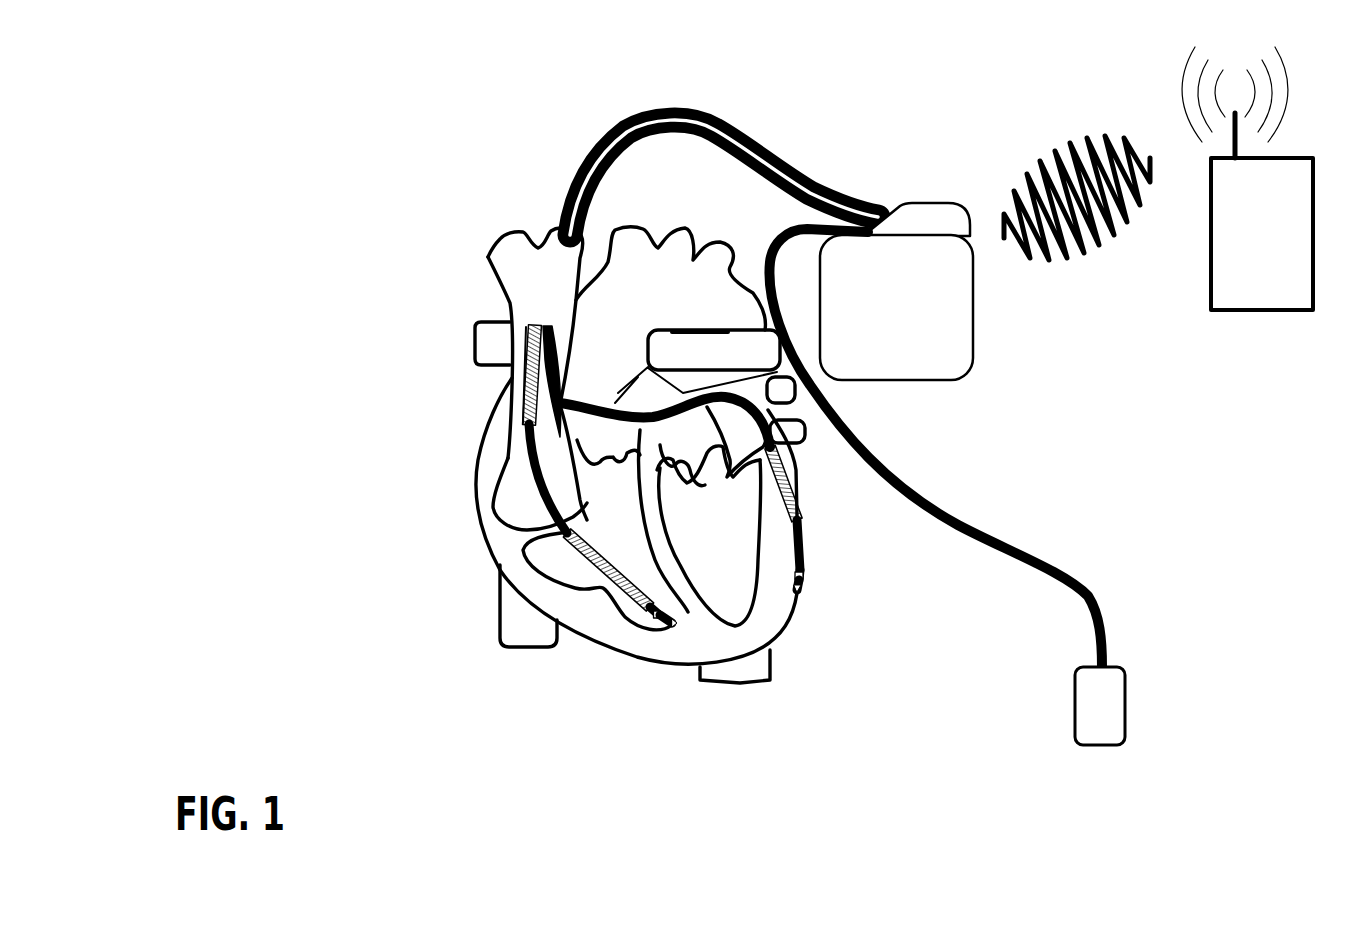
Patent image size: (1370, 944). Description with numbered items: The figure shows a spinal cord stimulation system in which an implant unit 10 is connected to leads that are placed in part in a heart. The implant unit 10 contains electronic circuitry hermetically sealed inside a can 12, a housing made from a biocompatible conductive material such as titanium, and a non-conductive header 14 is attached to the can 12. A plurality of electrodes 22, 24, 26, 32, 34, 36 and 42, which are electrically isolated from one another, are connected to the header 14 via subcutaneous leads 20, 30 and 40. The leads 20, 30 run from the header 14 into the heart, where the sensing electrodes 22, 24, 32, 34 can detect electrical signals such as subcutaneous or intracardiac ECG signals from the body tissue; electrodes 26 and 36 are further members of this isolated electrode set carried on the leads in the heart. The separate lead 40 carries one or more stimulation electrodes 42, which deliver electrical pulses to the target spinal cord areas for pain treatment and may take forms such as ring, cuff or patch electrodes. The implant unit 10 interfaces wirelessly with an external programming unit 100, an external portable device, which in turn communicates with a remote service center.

The implant unit 10 is at (1027, 358).
The can 12 is at (922, 352).
The header 14 is at (923, 227).
The subcutaneous lead 20 is at (580, 172).
The electrode 22 is at (670, 623).
The electrode 24 is at (657, 618).
The electrode 26 is at (570, 553).
The subcutaneous lead 30 is at (635, 153).
The electrode 32 is at (798, 590).
The electrode 34 is at (803, 577).
The electrode 36 is at (798, 513).
The lead 40 is at (1093, 602).
The stimulation electrode 42 is at (1100, 722).
The external programming unit 100 is at (1250, 320).